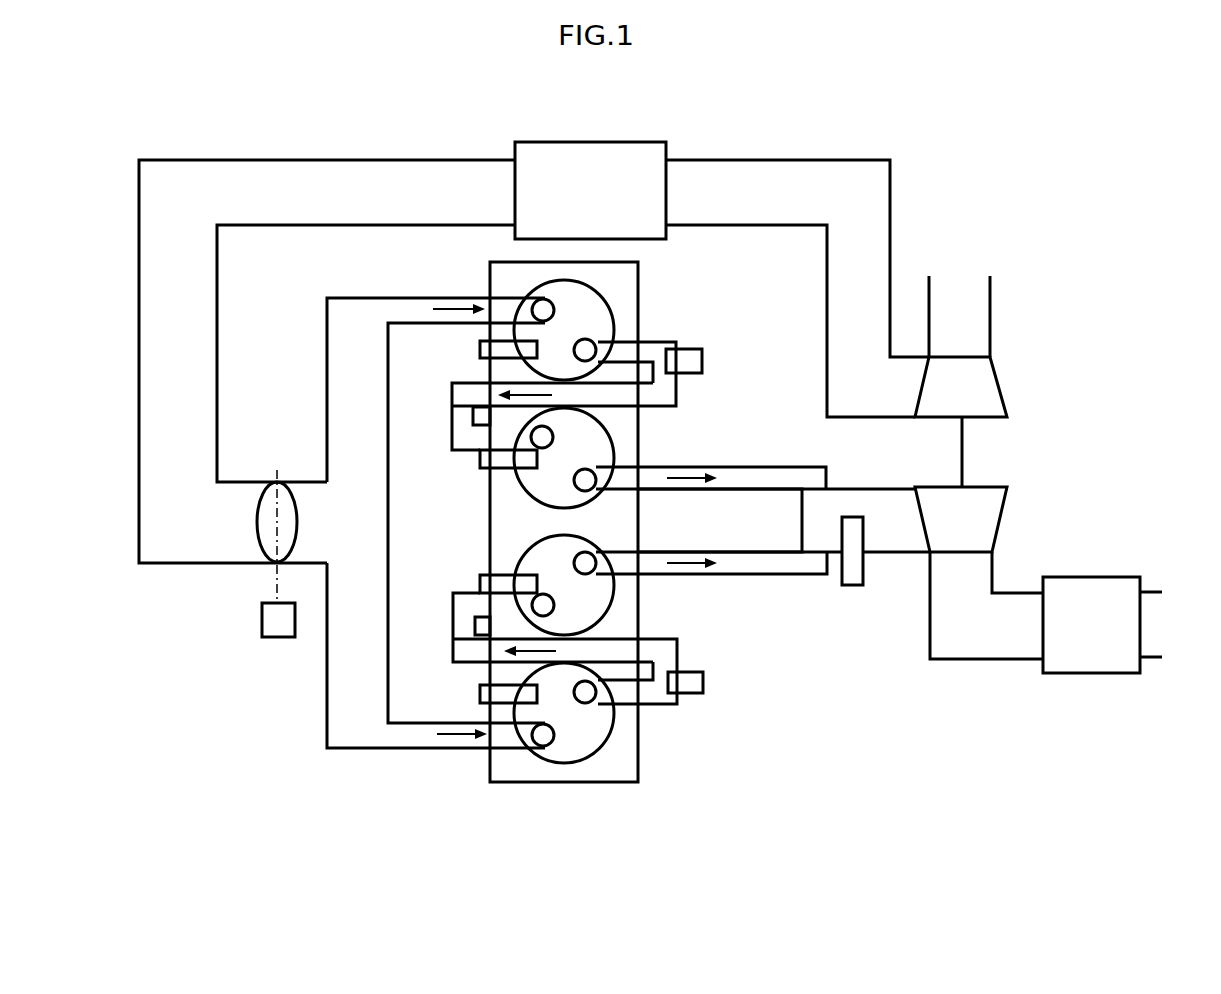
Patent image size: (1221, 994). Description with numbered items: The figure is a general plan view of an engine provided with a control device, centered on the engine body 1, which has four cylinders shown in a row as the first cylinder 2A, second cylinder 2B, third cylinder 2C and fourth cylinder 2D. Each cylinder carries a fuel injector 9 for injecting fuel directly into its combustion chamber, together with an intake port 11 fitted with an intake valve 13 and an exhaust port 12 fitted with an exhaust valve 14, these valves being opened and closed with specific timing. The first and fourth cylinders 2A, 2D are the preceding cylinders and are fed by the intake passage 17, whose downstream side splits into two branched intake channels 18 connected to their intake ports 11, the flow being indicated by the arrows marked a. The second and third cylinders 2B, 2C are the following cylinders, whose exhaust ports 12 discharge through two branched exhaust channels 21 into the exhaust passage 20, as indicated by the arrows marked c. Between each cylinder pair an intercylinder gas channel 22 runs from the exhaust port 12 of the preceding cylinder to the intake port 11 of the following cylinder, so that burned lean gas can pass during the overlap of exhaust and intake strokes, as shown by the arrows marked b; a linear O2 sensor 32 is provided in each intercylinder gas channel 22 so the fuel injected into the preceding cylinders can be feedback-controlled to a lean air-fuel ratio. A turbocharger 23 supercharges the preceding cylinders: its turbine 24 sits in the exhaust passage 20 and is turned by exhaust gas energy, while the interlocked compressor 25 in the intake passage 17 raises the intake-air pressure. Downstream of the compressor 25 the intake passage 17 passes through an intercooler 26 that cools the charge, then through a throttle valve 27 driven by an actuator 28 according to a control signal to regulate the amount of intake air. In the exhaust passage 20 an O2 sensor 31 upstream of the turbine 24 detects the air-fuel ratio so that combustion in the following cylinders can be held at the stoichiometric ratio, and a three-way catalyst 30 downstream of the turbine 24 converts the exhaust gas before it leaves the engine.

The engine body 1 is at (647, 262).
The first cylinder 2A is at (532, 290).
The second cylinder 2B is at (600, 492).
The third cylinder 2C is at (600, 548).
The fourth cylinder 2D is at (556, 766).
The fuel injector 9 is at (480, 350).
The intake port 11 is at (527, 302).
The exhaust port 12 is at (653, 375).
The intake valve 13 is at (552, 314).
The exhaust valve 14 is at (593, 345).
The intake passage 17 is at (245, 482).
The branched intake channel 18 is at (386, 298).
The exhaust passage 20 is at (876, 487).
The branched exhaust channel 21 is at (740, 506).
The intercylinder gas channel 22 is at (452, 392).
The turbocharger 23 is at (1005, 414).
The turbine 24 is at (998, 528).
The compressor 25 is at (1002, 398).
The intercooler 26 is at (612, 142).
The throttle valve 27 is at (258, 537).
The actuator 28 is at (283, 639).
The three-way catalyst 30 is at (1090, 675).
The O2 sensor 31 is at (850, 587).
The linear O2 sensor 32 is at (702, 361).